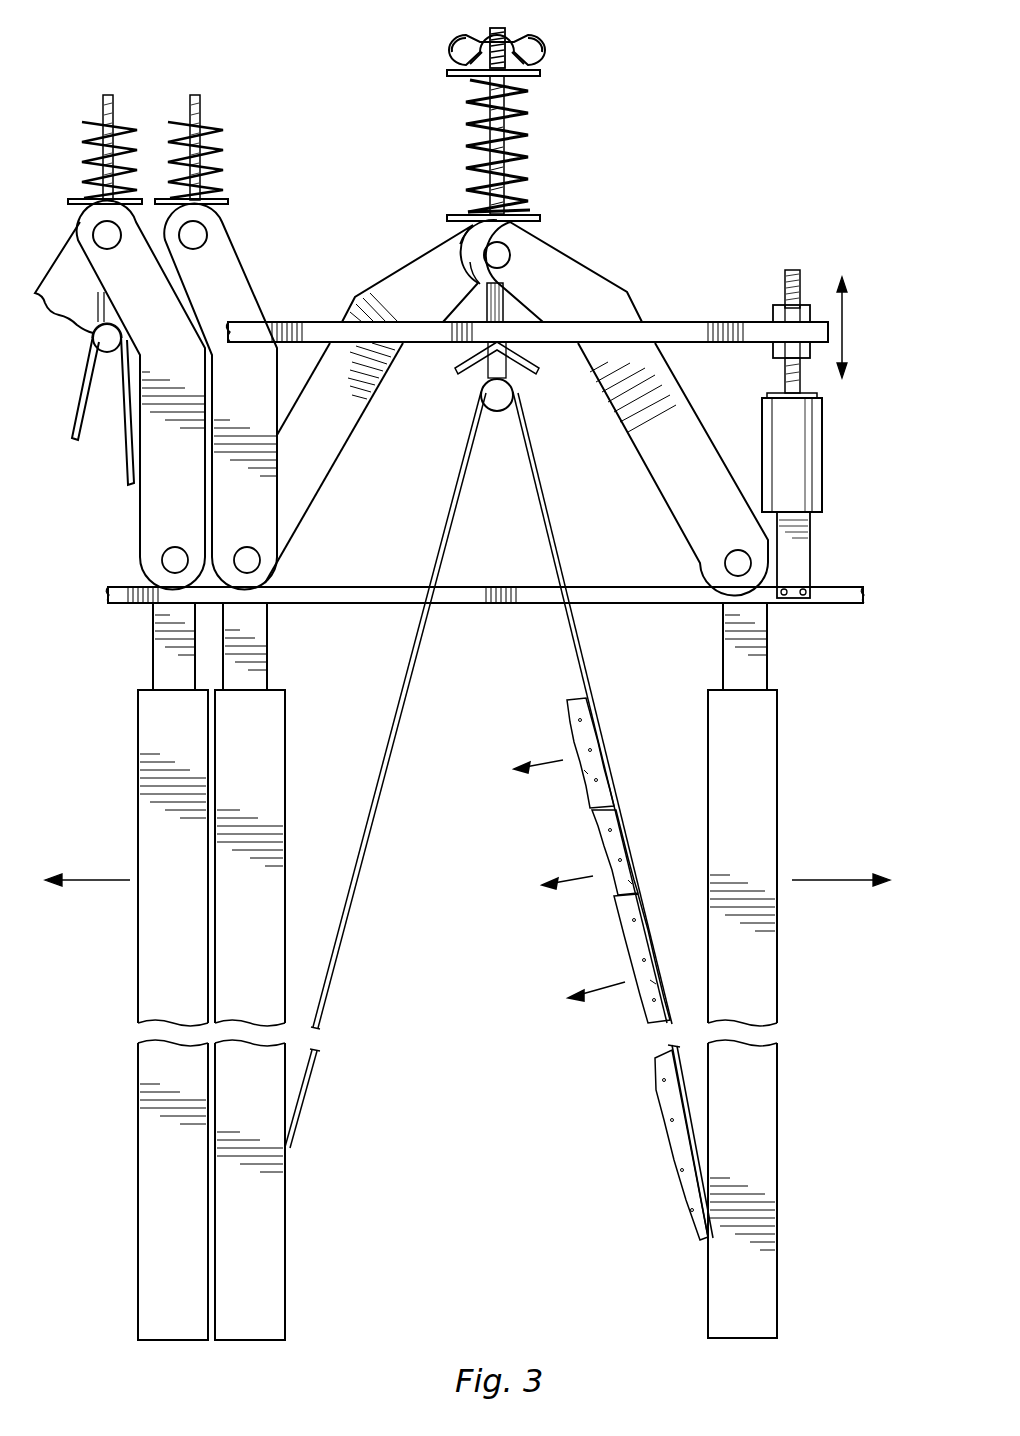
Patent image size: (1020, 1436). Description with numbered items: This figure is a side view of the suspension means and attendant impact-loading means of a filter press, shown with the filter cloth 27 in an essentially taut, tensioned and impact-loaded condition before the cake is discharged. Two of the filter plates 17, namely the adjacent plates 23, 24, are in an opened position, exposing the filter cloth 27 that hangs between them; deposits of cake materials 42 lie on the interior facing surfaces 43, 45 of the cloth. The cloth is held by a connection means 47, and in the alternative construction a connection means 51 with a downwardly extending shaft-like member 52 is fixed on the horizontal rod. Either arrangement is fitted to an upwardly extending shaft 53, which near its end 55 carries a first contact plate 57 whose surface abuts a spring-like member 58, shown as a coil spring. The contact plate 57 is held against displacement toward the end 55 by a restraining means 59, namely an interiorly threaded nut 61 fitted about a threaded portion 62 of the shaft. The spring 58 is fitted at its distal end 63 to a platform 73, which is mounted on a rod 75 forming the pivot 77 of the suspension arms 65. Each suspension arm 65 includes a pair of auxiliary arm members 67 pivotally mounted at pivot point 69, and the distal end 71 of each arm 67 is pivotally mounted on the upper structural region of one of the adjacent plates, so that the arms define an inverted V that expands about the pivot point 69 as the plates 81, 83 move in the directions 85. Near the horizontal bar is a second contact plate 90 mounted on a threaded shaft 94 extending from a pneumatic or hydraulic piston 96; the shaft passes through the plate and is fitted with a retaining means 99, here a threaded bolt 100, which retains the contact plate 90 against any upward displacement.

The filter plates 17 is at (748, 770).
The filter plate 23 is at (262, 1280).
The filter plate 24 is at (748, 1164).
The filter cloth 27 is at (588, 692).
The cake materials 42 is at (610, 928).
The interior facing surface 43 is at (428, 546).
The interior facing surface 45 is at (566, 654).
The connection means 47 is at (500, 145).
The connection means 51 is at (514, 378).
The shaft-like member 52 is at (470, 374).
The shaft 53 is at (504, 308).
The end of shaft 55 is at (506, 36).
The first contact plate 57 is at (542, 74).
The spring-like member 58 is at (530, 141).
The restraining means 59 is at (456, 44).
The threaded nut 61 is at (544, 46).
The threaded portion 62 is at (498, 30).
The distal end of spring 63 is at (526, 208).
The suspension arms 65 is at (384, 286).
The auxiliary arm members 67 is at (334, 424).
The pivot point 69 is at (472, 280).
The distal end of arm 71 is at (260, 564).
The platform 73 is at (542, 216).
The rod 75 is at (460, 246).
The pivot 77 is at (507, 252).
The filter plate 81 is at (278, 690).
The filter plate 83 is at (778, 690).
The directions of displacement 85 is at (92, 870).
The second contact plate 90 is at (682, 322).
The threaded shaft 94 is at (798, 278).
The piston 96 is at (816, 482).
The retaining means 99 is at (774, 300).
The threaded bolt 100 is at (842, 314).